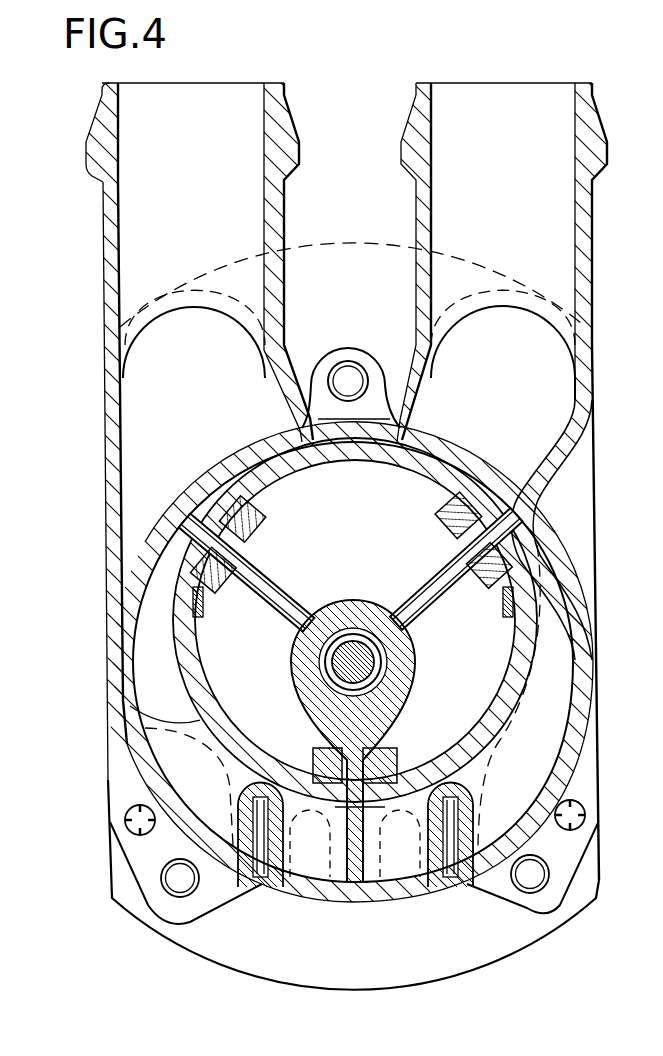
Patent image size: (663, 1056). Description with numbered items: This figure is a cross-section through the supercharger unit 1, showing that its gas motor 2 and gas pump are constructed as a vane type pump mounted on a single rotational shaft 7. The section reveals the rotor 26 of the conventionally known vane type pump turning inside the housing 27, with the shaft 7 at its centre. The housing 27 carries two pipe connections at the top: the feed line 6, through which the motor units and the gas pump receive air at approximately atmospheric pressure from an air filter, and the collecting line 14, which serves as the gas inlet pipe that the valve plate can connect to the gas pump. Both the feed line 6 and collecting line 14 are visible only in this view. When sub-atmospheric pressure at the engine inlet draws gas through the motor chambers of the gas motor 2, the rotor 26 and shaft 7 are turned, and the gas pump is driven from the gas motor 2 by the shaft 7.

The supercharger unit 1 is at (100, 552).
The gas motor 2 is at (158, 555).
The feed line 6 is at (214, 110).
The rotational shaft 7 is at (352, 657).
The collecting line 14 is at (453, 110).
The rotor 26 is at (190, 589).
The housing 27 is at (113, 637).